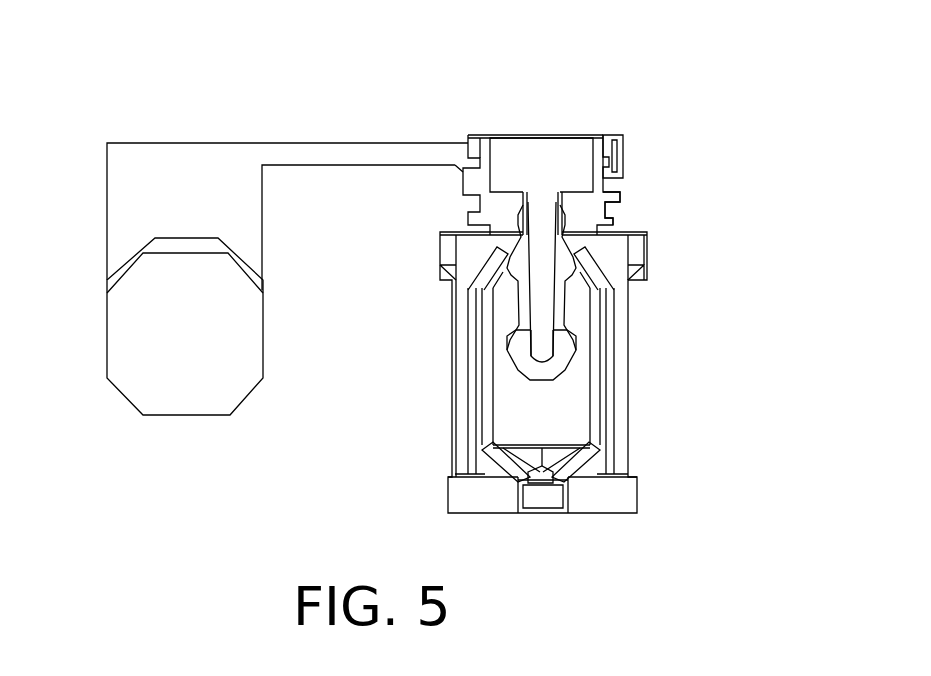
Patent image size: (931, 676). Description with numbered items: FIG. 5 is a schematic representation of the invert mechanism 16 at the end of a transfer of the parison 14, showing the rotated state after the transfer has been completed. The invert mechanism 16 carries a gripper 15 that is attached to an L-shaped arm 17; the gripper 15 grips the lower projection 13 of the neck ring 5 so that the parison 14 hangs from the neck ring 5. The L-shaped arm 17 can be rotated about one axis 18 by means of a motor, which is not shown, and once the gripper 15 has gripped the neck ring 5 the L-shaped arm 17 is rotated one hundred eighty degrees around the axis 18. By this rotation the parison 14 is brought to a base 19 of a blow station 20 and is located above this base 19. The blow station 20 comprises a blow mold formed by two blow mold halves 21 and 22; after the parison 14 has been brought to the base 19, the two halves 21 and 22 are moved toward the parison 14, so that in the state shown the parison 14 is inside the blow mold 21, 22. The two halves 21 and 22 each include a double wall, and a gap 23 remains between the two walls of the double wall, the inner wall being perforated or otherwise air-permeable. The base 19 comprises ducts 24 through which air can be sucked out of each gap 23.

The neck ring 5 is at (589, 208).
The lower projection 13 is at (610, 158).
The parison 14 is at (563, 353).
The gripper 15 is at (463, 135).
The invert mechanism 16 is at (270, 65).
The L-shaped arm 17 is at (228, 142).
The axis 18 is at (250, 337).
The base 19 is at (582, 502).
The blow station 20 is at (428, 425).
The blow mold half 21 is at (463, 330).
The blow mold half 22 is at (623, 422).
The gap 23 is at (486, 281).
The duct 24 is at (508, 467).